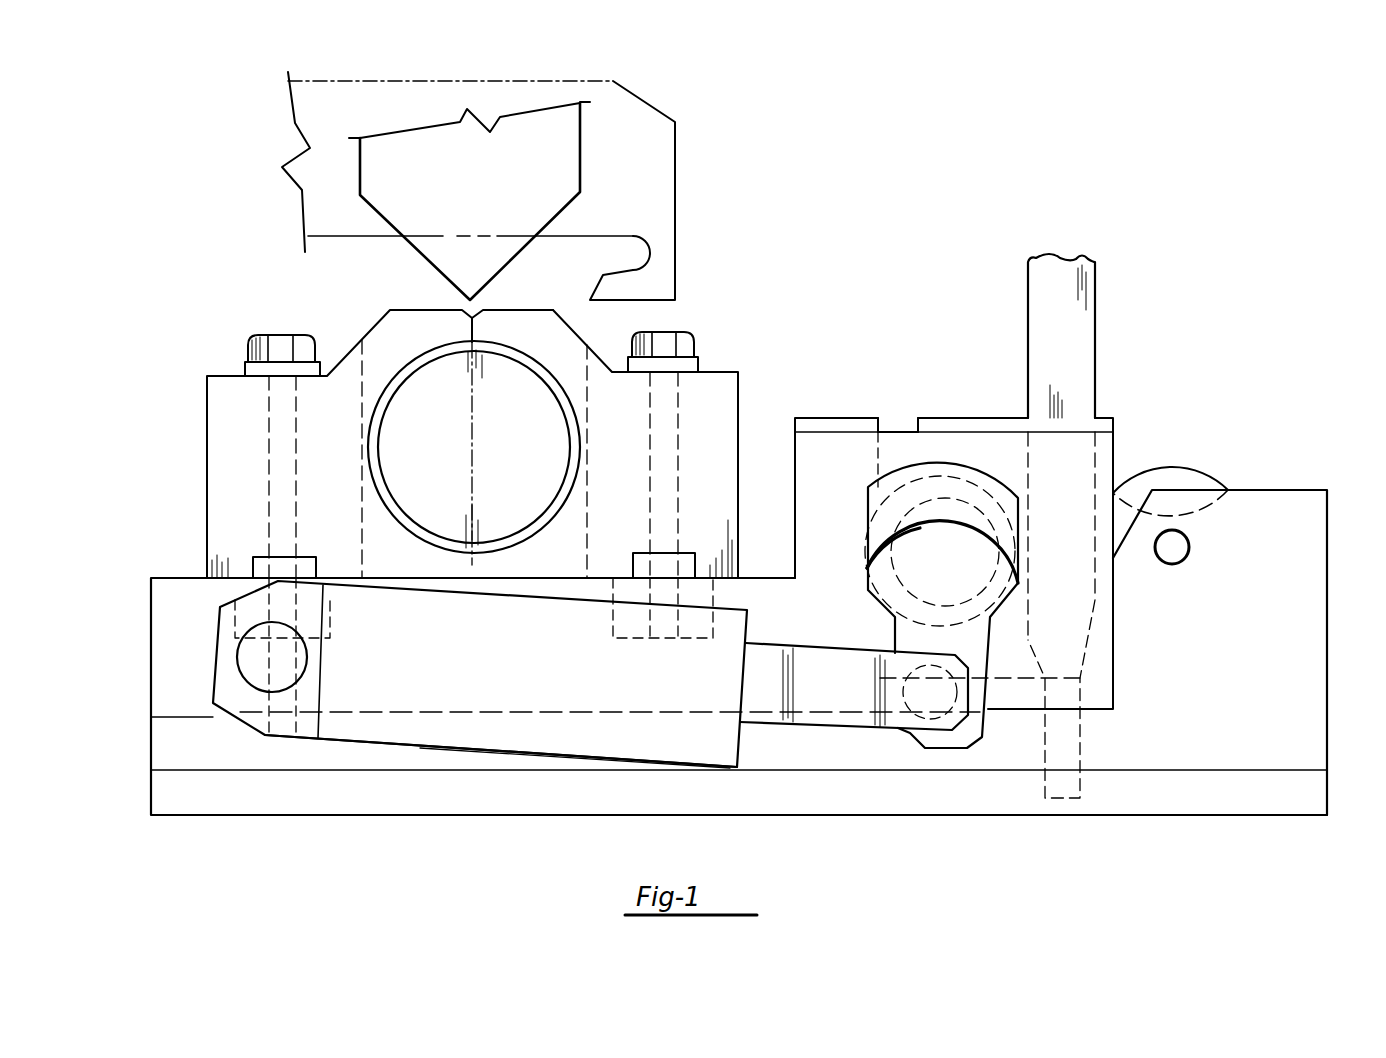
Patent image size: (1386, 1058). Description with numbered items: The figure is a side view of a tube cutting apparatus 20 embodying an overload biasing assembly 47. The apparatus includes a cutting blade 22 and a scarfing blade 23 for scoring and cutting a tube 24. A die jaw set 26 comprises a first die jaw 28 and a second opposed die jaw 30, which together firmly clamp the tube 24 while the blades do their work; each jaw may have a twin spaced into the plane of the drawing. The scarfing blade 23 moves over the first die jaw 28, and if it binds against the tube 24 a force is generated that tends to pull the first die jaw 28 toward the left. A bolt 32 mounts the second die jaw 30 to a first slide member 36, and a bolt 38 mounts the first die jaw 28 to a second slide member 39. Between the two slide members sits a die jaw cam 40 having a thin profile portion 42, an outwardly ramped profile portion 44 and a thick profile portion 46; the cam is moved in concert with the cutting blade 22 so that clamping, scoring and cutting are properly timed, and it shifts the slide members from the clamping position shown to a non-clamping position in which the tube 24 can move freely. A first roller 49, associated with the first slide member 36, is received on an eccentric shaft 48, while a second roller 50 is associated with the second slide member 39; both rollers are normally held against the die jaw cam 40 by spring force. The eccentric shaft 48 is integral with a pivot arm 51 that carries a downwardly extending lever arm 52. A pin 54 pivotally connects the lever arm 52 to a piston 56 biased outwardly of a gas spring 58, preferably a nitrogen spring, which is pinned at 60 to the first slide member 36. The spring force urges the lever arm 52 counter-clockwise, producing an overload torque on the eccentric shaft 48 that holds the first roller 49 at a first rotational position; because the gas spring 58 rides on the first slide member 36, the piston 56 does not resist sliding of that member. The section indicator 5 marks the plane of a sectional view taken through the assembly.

The section line 5- 5 is at (957, 402).
The tube cutting apparatus 20 is at (790, 270).
The cutting blade 22 is at (420, 256).
The scarfing blade 23 is at (657, 233).
The tube 24 is at (375, 457).
The die jaw set 26 is at (568, 314).
The first die jaw 28 is at (218, 427).
The second die jaw 30 is at (720, 397).
The bolt 32 is at (683, 342).
The first slide member 36 is at (160, 612).
The bolt 38 is at (250, 342).
The second slide member 39 is at (1310, 658).
The die jaw cam 40 is at (1083, 337).
The thin profile portion 42 is at (1047, 735).
The outwardly ramped profile portion 44 is at (1047, 678).
The thick profile portion 46 is at (1035, 365).
The overload biasing assembly 47 is at (595, 735).
The eccentric shaft 48 is at (921, 506).
The first roller 49 is at (883, 532).
The second roller 50 is at (1172, 477).
The pivot arm 51 is at (883, 570).
The lever arm 52 is at (908, 632).
The pin 54 is at (927, 692).
The piston 56 is at (820, 698).
The gas spring 58 is at (418, 700).
The pin 60 is at (252, 665).